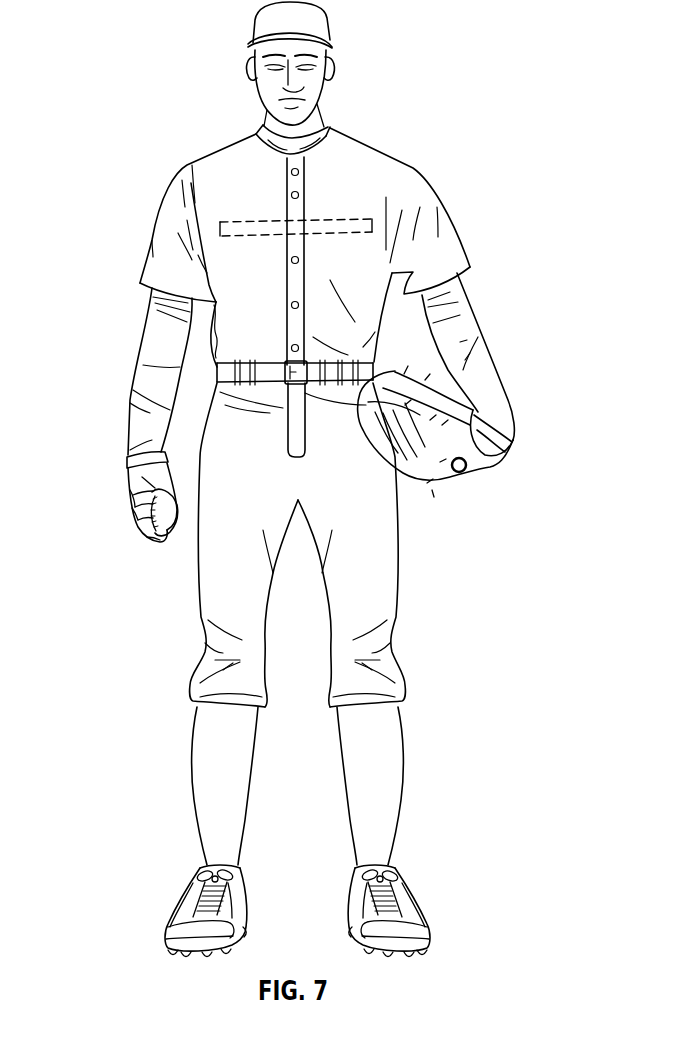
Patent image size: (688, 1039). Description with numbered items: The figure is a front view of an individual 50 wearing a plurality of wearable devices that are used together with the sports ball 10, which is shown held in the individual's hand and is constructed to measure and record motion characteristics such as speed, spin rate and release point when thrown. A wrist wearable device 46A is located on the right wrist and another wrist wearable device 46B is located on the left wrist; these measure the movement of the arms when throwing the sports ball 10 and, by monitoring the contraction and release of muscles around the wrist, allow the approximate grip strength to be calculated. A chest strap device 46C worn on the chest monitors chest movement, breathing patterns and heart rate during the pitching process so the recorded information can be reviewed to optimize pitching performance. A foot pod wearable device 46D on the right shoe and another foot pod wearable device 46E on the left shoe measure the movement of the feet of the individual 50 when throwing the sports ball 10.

The sports ball 10 is at (176, 527).
The individual 50 is at (403, 178).
The wrist wearable device 46A is at (128, 462).
The wrist wearable device 46B is at (514, 441).
The chest strap device 46C is at (328, 218).
The foot pod wearable device 46D is at (165, 932).
The foot pod wearable device 46E is at (430, 931).